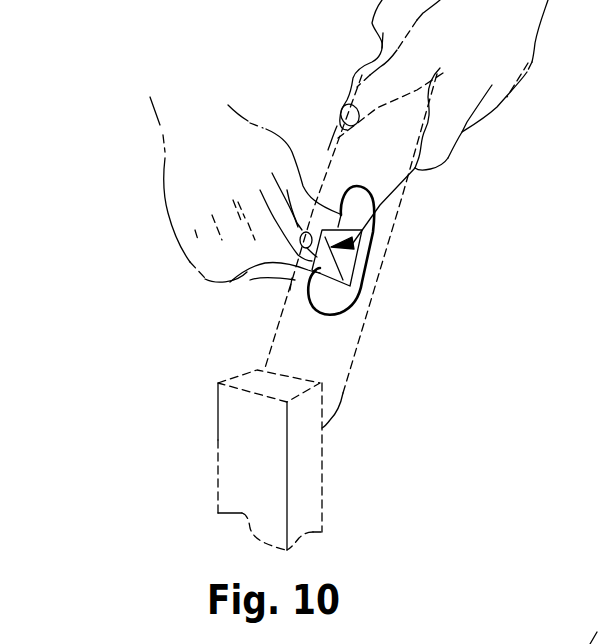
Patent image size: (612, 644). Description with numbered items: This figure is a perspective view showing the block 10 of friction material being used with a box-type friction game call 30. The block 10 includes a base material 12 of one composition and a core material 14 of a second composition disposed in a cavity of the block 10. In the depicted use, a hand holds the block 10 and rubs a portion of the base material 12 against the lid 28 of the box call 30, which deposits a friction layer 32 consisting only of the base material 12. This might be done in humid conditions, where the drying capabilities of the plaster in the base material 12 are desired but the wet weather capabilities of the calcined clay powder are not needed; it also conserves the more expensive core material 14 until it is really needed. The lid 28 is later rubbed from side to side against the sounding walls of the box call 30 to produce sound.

The block of friction material 10 is at (365, 252).
The base material 12 is at (350, 263).
The core material 14 is at (260, 265).
The lid 28 is at (340, 358).
The box-type friction game call 30 is at (200, 401).
The friction layer 32 is at (362, 212).